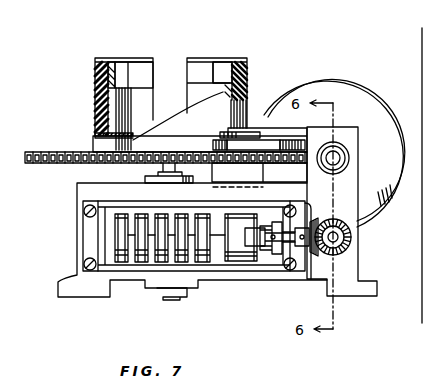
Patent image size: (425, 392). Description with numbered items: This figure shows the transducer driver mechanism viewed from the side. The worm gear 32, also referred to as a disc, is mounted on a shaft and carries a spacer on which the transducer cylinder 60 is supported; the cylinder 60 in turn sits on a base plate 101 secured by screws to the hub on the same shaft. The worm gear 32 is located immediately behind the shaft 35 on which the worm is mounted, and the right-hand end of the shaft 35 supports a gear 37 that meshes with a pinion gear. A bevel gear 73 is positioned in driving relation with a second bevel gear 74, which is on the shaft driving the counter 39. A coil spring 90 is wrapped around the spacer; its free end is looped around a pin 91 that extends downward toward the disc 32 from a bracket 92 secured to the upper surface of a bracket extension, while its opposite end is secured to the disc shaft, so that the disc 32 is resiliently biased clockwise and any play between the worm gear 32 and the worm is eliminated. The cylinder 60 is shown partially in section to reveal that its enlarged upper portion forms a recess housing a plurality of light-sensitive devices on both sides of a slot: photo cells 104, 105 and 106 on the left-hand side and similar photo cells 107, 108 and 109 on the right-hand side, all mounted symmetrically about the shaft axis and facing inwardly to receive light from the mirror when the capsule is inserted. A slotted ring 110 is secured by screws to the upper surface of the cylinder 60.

The worm gear 32 is at (80, 166).
The shaft 35 is at (349, 158).
The gear 37 is at (350, 88).
The counter 39 is at (216, 262).
The transducer cylinder 60 is at (112, 80).
The bevel gear 73 is at (353, 240).
The second bevel gear 74 is at (318, 252).
The coil spring 90 is at (180, 145).
The pin 91 is at (246, 133).
The bracket 92 is at (342, 125).
The base plate 101 is at (107, 137).
The photo cell 104 is at (148, 75).
The photo cell 105 is at (123, 62).
The photo cell 106 is at (95, 72).
The photo cell 107 is at (190, 72).
The photo cell 108 is at (222, 70).
The photo cell 109 is at (250, 68).
The slotted ring 110 is at (110, 62).